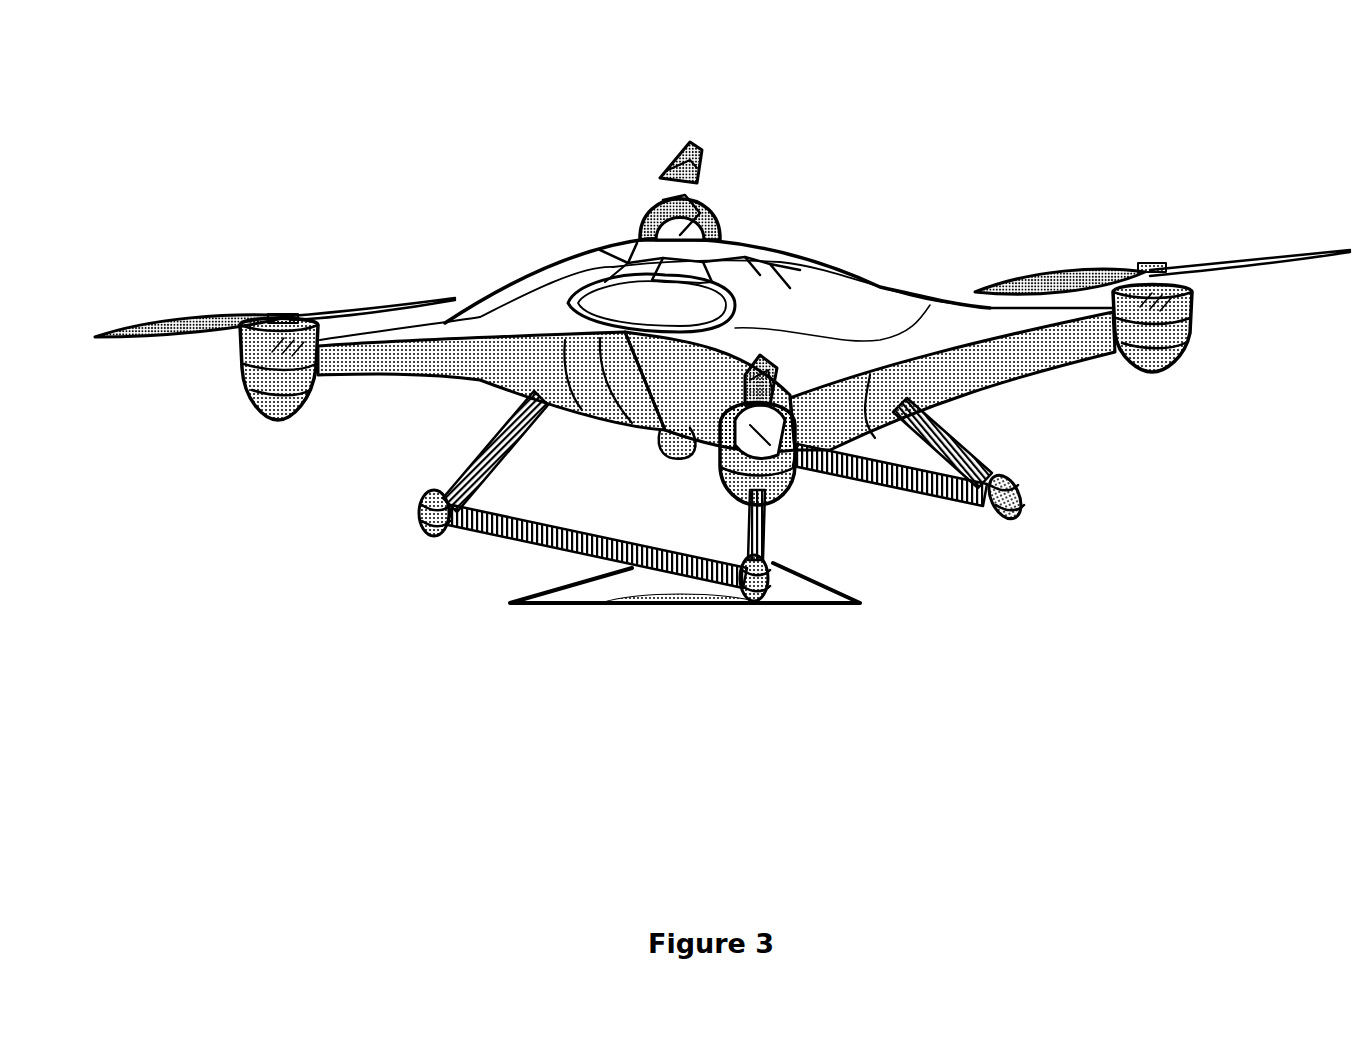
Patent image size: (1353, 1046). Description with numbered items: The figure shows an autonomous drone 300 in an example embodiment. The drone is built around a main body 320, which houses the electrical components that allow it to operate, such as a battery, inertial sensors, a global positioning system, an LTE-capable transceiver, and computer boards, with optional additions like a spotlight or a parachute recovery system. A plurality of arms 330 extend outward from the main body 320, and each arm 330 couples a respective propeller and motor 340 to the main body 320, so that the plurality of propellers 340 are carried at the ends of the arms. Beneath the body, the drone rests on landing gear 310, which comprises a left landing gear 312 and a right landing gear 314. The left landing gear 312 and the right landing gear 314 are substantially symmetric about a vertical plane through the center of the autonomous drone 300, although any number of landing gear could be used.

The autonomous drone 300 is at (228, 143).
The landing gear 310 is at (372, 488).
The left landing gear 312 is at (478, 585).
The right landing gear 314 is at (965, 540).
The main body 320 is at (617, 262).
The arm 330 is at (398, 330).
The propeller 340 is at (170, 327).